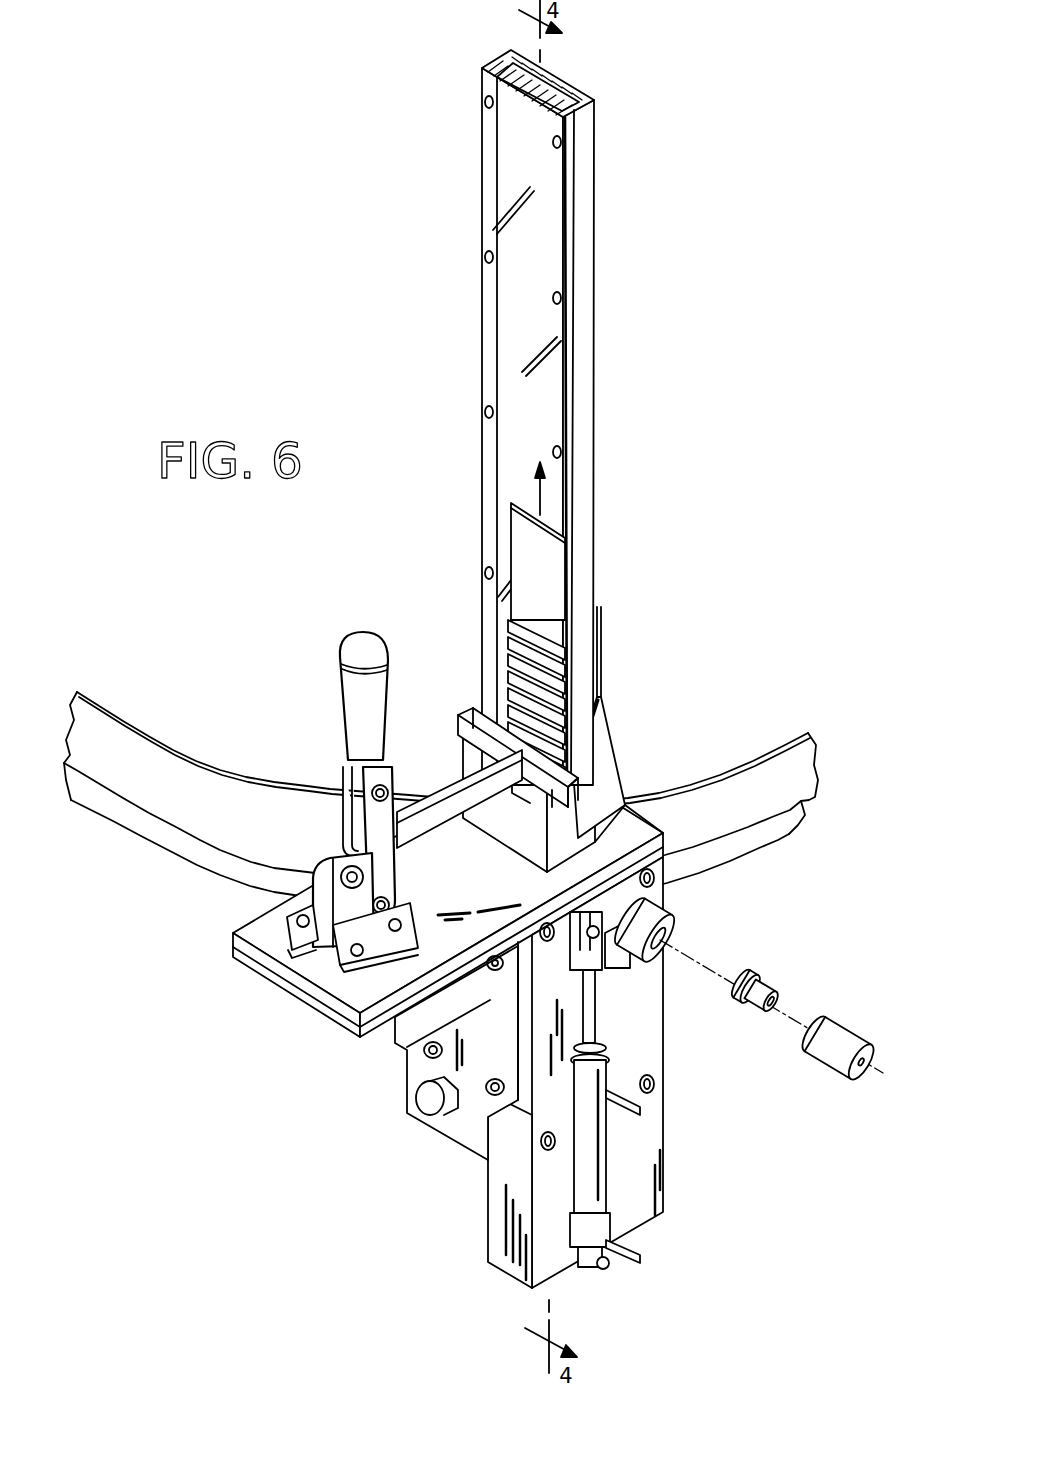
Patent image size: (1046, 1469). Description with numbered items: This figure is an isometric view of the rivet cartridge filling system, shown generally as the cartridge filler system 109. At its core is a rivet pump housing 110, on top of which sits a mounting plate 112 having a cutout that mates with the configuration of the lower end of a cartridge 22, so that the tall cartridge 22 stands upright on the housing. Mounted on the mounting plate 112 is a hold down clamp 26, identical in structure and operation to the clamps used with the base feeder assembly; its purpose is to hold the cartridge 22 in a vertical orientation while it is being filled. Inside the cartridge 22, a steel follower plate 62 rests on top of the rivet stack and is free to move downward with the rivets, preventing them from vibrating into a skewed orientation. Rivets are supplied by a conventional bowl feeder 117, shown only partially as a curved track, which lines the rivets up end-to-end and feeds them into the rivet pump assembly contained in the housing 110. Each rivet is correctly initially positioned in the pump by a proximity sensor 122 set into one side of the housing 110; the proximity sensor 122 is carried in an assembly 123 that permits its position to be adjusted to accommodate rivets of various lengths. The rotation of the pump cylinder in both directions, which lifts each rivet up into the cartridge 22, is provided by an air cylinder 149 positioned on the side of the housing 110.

The cartridge 22 is at (596, 466).
The steel follower plate 62 is at (560, 578).
The bowl feeder 117 is at (145, 722).
The hold down clamp 26 is at (336, 764).
The mounting plate 112 is at (640, 828).
The cartridge filler system 109 is at (296, 1014).
The rivet pump housing 110 is at (660, 1050).
The assembly 123 is at (670, 943).
The proximity sensor 122 is at (768, 985).
The air cylinder 149 is at (612, 1160).